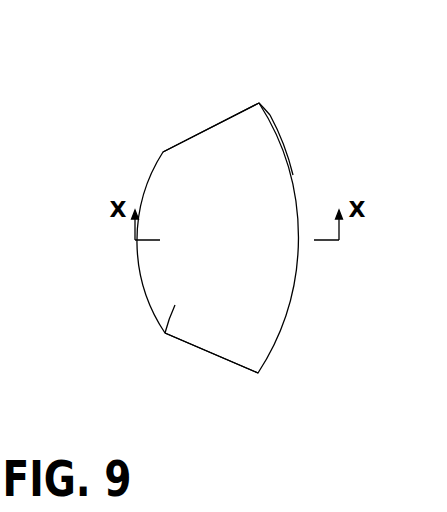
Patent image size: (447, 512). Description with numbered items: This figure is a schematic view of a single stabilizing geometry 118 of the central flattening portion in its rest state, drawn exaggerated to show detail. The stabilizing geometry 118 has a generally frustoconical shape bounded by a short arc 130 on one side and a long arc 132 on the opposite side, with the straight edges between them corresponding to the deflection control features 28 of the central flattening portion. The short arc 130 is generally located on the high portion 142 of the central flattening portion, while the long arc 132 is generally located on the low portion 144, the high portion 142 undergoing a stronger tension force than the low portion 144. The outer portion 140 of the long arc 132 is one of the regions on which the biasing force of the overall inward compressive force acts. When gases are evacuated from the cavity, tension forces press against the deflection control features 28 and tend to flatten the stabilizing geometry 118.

The stabilizing geometry 118 is at (117, 105).
The deflection control features 28 is at (208, 125).
The outer portion of the long arc 140 is at (293, 175).
The short arc 130 is at (192, 258).
The long arc 132 is at (297, 263).
The high portion 142 is at (166, 305).
The low portion 144 is at (289, 341).